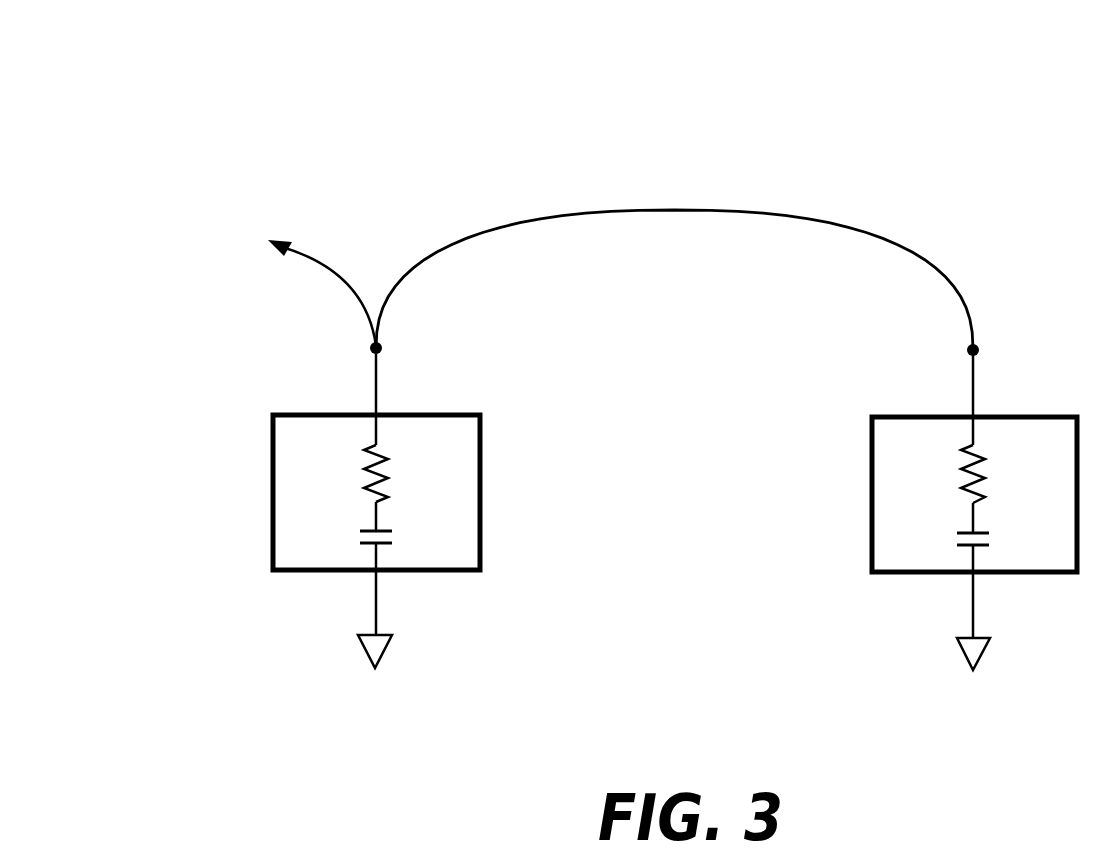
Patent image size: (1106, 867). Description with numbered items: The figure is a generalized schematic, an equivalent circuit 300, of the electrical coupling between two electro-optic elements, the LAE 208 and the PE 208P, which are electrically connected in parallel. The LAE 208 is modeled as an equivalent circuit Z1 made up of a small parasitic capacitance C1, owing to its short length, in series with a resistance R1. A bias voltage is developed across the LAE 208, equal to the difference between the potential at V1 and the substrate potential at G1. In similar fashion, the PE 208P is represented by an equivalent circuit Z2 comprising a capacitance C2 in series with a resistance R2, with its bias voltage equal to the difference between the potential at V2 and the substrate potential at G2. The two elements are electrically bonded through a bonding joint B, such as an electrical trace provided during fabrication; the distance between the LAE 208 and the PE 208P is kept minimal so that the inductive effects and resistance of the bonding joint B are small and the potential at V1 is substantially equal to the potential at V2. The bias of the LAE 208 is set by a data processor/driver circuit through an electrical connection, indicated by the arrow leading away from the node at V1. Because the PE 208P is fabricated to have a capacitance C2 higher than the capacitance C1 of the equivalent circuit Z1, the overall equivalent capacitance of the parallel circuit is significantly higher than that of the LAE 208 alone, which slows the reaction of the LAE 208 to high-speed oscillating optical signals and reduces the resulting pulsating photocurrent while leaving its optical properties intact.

The circuit 300 is at (405, 78).
The LAE 208 is at (361, 498).
The PE 208P is at (964, 496).
The bonding joint B is at (758, 214).
The potential at V1 is at (382, 348).
The potential at V2 is at (967, 352).
The equivalent circuit Z1 is at (327, 414).
The equivalent circuit Z2 is at (919, 467).
The resistance R1 is at (404, 473).
The resistance R2 is at (1001, 474).
The capacitance C1 is at (402, 539).
The capacitance C2 is at (999, 540).
The substrate potential G1 is at (368, 652).
The substrate potential G2 is at (968, 650).